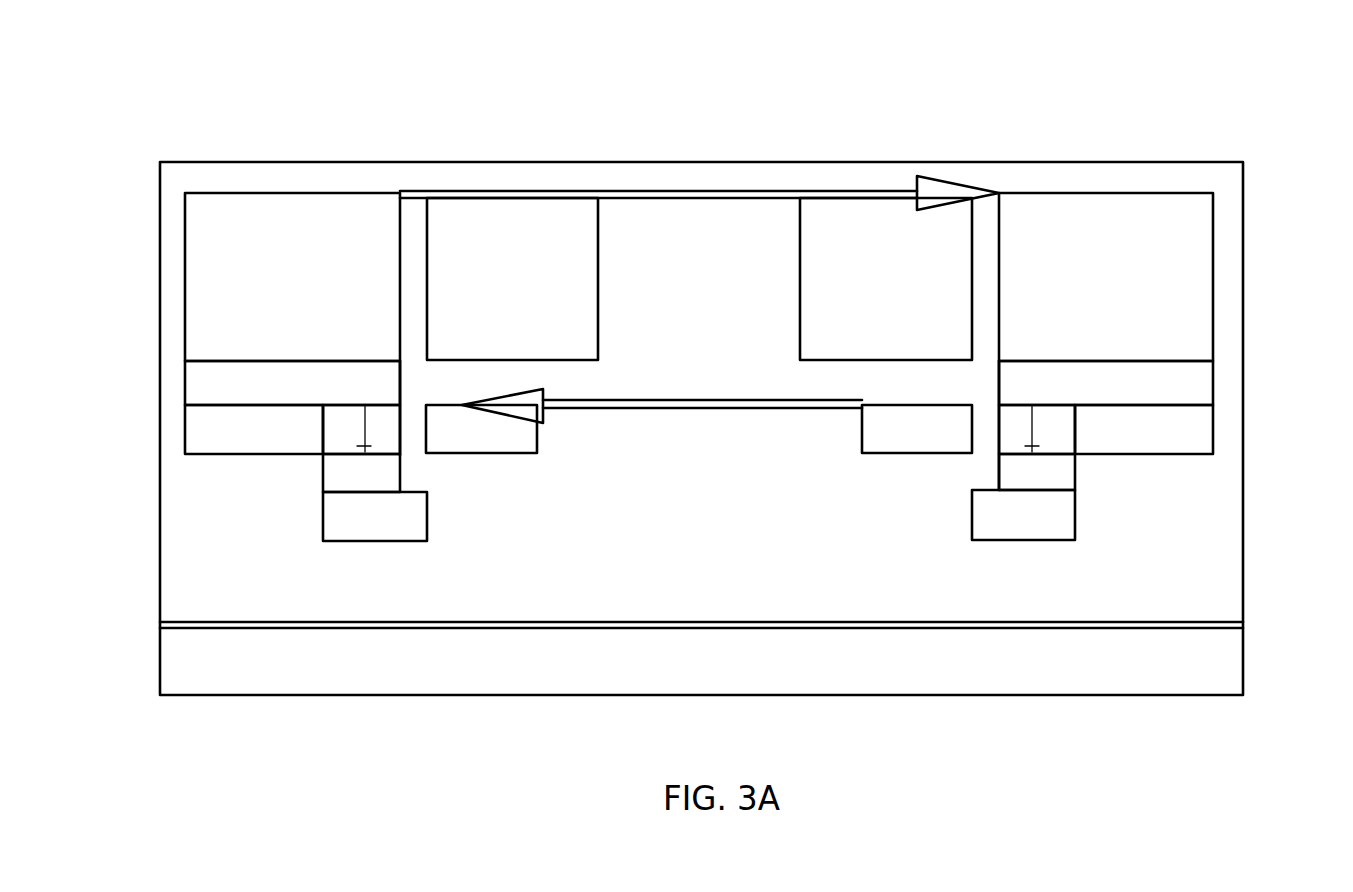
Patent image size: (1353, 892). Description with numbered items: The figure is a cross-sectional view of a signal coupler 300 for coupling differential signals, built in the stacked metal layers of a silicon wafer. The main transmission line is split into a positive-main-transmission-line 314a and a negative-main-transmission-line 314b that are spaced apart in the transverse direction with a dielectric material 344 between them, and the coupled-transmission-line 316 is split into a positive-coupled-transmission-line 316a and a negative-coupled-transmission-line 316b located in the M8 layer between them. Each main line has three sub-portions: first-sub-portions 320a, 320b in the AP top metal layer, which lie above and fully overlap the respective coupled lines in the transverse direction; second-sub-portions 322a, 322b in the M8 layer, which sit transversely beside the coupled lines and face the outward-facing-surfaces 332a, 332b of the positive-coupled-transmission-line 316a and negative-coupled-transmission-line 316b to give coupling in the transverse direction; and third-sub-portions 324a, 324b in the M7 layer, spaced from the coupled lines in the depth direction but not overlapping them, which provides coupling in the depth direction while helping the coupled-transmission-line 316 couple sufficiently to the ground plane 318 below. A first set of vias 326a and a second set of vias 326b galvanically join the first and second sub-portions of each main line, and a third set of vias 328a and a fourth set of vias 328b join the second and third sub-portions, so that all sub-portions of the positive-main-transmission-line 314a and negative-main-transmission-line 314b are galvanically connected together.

The signal coupler 300 is at (1168, 135).
The positive-main-transmission-line 314a is at (251, 348).
The negative-main-transmission-line 314b is at (1149, 335).
The coupled-transmission-line 316 is at (512, 458).
The positive-coupled-transmission-line 316a is at (480, 453).
The negative-coupled-transmission-line 316b is at (909, 453).
The ground plane 318 is at (1045, 678).
The first-sub-portion 320a is at (195, 262).
The first-sub-portion 320b is at (1203, 258).
The second-sub-portion 322a is at (195, 432).
The second-sub-portion 322b is at (1205, 430).
The third-sub-portion 324a is at (330, 525).
The third-sub-portion 324b is at (1067, 523).
The first set of vias 326a is at (195, 383).
The second set of vias 326b is at (1205, 382).
The third set of vias 328a is at (330, 475).
The fourth set of vias 328b is at (1067, 472).
The outward-facing-surface 332a is at (426, 420).
The outward-facing-surface 332b is at (979, 419).
The dielectric material 344 is at (705, 232).